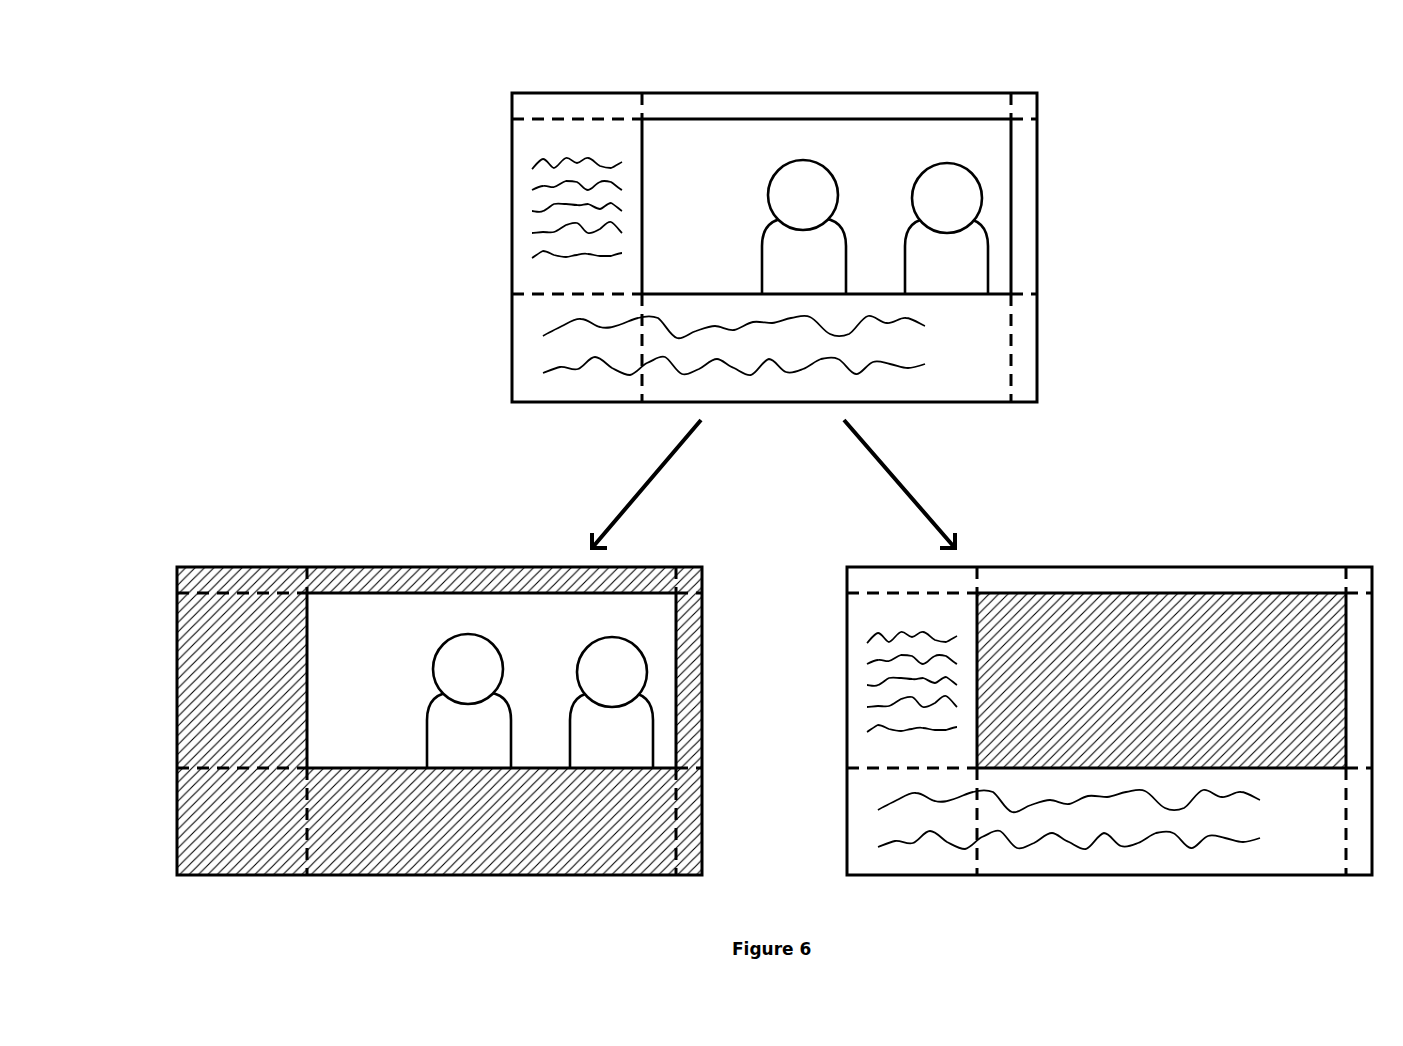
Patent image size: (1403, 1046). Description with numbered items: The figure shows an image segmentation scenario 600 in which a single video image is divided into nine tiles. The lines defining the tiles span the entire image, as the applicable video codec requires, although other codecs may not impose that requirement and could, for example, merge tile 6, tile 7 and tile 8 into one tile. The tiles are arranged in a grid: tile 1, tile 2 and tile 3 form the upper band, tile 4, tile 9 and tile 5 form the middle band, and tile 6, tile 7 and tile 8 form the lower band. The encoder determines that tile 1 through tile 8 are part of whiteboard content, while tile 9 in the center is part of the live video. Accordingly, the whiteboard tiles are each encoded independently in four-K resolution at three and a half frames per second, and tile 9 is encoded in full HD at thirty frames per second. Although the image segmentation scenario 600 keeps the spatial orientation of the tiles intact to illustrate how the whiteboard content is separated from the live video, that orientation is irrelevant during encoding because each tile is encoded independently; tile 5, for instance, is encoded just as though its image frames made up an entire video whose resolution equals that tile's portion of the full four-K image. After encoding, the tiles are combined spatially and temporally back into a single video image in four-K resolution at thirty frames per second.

The image segmentation scenario 600 is at (170, 83).
The tile 1 is at (577, 343).
The tile 2 is at (826, 343).
The tile 3 is at (1024, 344).
The tile 4 is at (577, 443).
The tile 5 is at (1024, 447).
The tile 6 is at (718, 584).
The tile 7 is at (826, 584).
The tile 8 is at (1024, 584).
The tile 9 is at (826, 443).